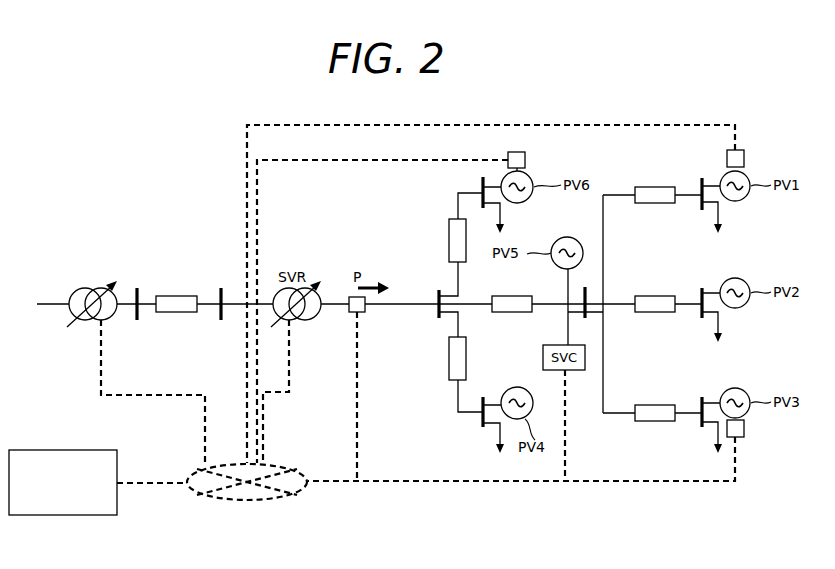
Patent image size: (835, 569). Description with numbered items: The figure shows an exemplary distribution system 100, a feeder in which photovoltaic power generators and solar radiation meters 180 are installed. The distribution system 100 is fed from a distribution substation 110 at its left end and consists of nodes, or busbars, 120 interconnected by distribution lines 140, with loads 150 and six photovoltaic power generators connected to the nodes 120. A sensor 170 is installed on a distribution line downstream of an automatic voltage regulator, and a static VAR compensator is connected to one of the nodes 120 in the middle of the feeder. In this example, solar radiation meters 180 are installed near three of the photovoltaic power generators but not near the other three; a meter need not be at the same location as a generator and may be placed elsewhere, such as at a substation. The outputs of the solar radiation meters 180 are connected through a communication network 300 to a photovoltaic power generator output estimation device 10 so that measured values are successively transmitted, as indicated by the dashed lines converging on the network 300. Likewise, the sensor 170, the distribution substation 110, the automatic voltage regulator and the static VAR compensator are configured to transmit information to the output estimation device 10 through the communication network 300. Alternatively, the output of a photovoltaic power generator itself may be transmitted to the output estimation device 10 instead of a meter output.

The photovoltaic power generator output estimation device 10 is at (70, 450).
The distribution system 100 is at (105, 158).
The distribution substation 110 is at (83, 288).
The node 120 is at (137, 288).
The distribution line 140 is at (176, 296).
The load 150 is at (503, 220).
The sensor 170 is at (366, 312).
The solar radiation meter 180 is at (526, 160).
The communication network 300 is at (255, 500).